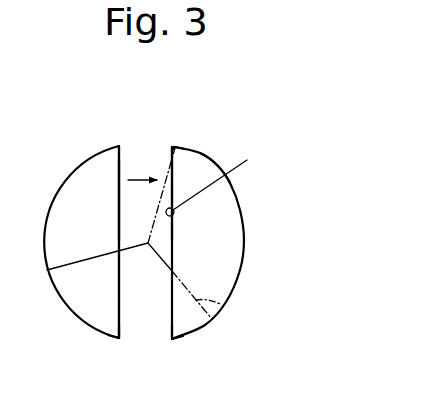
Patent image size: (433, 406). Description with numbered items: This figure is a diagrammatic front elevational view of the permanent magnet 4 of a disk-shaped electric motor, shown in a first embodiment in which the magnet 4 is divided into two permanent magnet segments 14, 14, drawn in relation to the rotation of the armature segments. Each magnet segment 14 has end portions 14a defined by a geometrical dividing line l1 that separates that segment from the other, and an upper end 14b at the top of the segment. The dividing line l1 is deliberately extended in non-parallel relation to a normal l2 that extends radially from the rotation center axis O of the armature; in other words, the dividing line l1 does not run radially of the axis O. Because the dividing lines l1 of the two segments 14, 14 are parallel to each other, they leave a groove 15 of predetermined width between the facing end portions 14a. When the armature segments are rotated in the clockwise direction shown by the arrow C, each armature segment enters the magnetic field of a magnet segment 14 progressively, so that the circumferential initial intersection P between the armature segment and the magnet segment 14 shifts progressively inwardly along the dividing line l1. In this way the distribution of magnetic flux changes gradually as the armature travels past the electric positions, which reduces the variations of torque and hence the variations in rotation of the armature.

The permanent magnet 4 is at (216, 159).
The permanent magnet segment 14 is at (85, 161).
The end portion 14a is at (122, 320).
The top end of ball half 14b is at (179, 146).
The groove 15 is at (150, 156).
The arrow C is at (142, 191).
The circumferential initial intersection P is at (174, 146).
The rotation center axis O is at (109, 266).
The dividing line l1 is at (124, 150).
The normal l2 is at (170, 160).